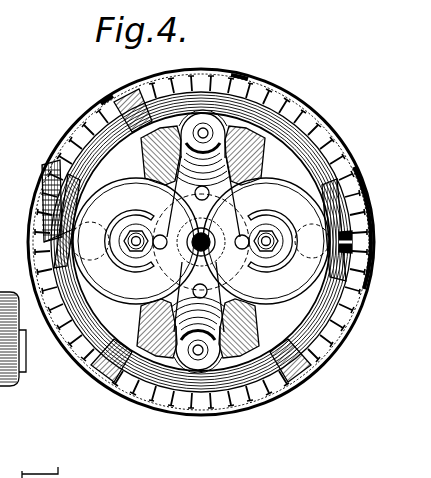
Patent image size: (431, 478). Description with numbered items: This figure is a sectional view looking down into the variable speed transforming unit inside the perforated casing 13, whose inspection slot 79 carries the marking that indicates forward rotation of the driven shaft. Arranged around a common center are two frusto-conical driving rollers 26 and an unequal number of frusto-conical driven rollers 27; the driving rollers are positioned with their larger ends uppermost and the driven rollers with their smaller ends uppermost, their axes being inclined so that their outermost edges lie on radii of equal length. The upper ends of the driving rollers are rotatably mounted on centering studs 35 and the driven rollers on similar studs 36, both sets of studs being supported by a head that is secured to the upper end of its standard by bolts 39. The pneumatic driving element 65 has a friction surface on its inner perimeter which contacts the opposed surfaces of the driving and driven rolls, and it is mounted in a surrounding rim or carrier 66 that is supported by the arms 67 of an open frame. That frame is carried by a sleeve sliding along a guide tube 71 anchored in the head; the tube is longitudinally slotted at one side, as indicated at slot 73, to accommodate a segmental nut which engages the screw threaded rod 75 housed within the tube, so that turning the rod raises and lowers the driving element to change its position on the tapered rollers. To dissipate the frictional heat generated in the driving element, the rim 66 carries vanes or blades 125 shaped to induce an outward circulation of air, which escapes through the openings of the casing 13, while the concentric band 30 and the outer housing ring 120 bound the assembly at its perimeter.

The outer housing ring 120 is at (201, 242).
The vanes or blades 125 is at (199, 242).
The driving element 65 is at (38, 201).
The rim or carrier 66 is at (40, 221).
The arms 67 is at (217, 241).
The perforated casing 13 is at (201, 268).
The inspection slot 79 is at (201, 266).
The driven rollers 27 is at (200, 242).
The driving rollers 26 is at (200, 240).
The studs 36 is at (196, 241).
The band 30 is at (201, 242).
The slot 73 is at (212, 244).
The centering studs 35 is at (198, 243).
The bolts 39 is at (196, 242).
The screw threaded rod 75 is at (201, 242).
The guide tube 71 is at (201, 252).